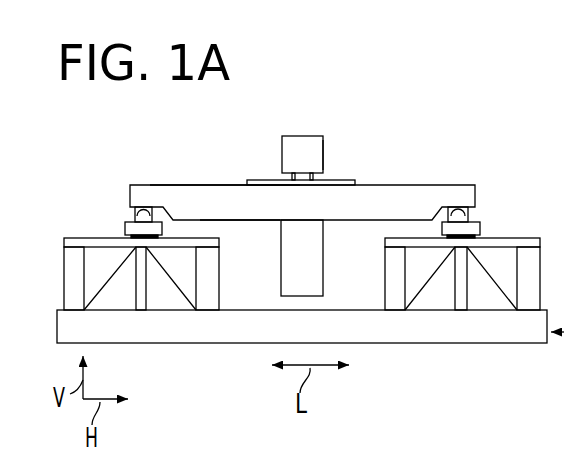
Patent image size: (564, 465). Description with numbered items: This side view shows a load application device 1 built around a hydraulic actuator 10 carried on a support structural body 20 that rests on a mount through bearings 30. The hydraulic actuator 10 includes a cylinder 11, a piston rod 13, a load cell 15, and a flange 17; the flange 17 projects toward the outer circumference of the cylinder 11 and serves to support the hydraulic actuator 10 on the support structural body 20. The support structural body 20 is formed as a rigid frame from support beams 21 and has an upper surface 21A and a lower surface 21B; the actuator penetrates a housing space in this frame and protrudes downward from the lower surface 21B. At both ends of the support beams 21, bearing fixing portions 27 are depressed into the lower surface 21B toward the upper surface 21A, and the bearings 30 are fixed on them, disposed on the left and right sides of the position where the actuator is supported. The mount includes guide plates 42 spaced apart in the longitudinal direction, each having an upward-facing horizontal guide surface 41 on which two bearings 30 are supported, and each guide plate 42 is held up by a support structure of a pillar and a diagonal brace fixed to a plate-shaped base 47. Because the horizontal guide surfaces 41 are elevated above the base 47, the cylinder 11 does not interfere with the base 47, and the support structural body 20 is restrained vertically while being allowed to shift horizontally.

The load application device 1 is at (466, 117).
The hydraulic actuator 10 is at (306, 131).
The cylinder 11 is at (324, 272).
The piston rod 13 is at (292, 177).
The load cell 15 is at (325, 153).
The flange 17 is at (344, 180).
The support structural body 20 is at (408, 182).
The support beam 21 is at (275, 222).
The upper surface 21A is at (180, 184).
The lower surface 21B is at (249, 222).
The bearing fixing portion 27 is at (136, 208).
The bearing 30 is at (132, 220).
The horizontal guide surface 41 is at (74, 237).
The guide plate 42 is at (63, 240).
The base 47 is at (423, 344).